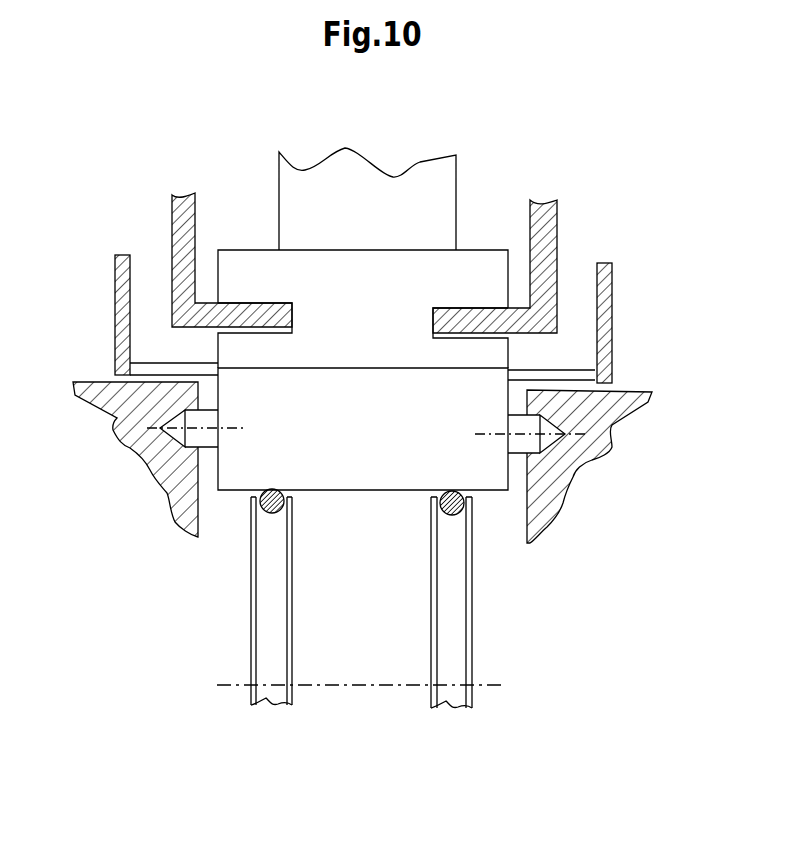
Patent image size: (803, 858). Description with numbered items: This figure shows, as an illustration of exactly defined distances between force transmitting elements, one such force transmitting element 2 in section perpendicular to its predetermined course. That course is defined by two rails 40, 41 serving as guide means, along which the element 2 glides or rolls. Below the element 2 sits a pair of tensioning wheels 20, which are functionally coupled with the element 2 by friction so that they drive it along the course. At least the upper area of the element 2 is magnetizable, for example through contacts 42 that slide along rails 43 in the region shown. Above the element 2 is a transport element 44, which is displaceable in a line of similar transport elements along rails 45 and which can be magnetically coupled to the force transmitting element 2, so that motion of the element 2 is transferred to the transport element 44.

The force transmitting element 2 is at (356, 436).
The tensioning wheels 20 is at (260, 615).
The rail 40 is at (547, 487).
The rail 41 is at (167, 470).
The contacts 42 is at (160, 365).
The rails 43 is at (117, 282).
The transport element 44 is at (352, 306).
The rails 45 is at (178, 227).